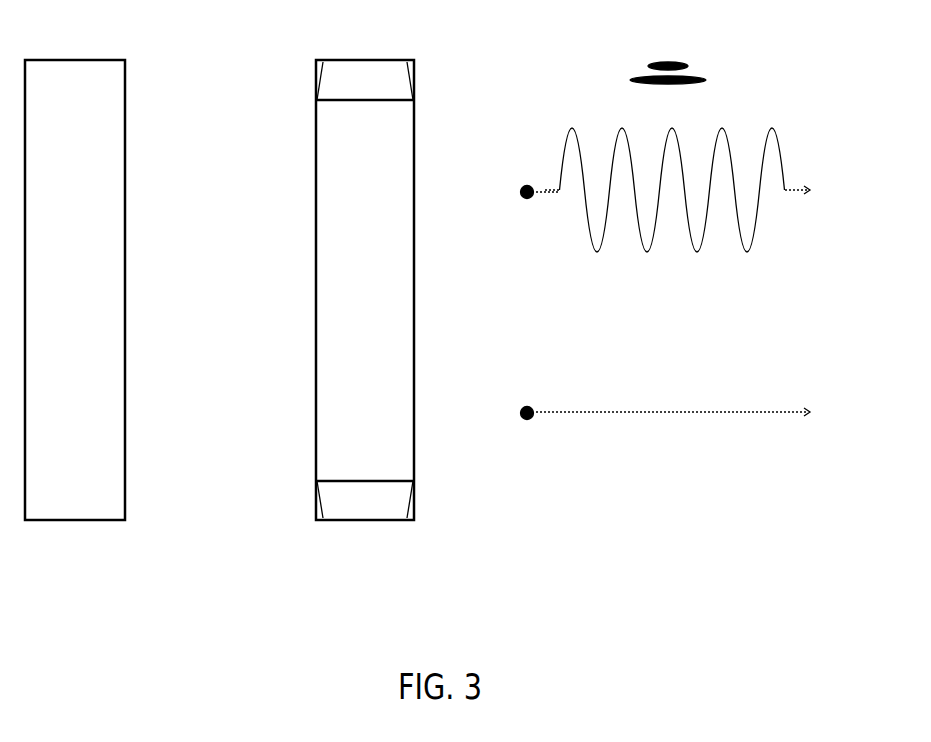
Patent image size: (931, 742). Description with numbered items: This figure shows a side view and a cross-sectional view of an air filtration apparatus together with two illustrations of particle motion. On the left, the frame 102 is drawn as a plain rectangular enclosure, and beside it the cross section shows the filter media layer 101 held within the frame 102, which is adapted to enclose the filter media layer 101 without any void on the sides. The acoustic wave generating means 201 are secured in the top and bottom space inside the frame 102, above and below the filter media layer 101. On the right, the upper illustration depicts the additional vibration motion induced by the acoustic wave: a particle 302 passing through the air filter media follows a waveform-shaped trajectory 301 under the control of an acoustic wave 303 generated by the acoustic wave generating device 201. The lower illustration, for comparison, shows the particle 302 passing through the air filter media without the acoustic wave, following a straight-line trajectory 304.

The filter media layer 101 is at (363, 252).
The frame 102 is at (127, 115).
The acoustic wave generating means 201 is at (337, 83).
The trajectory 301 is at (797, 190).
The particle 302 is at (517, 207).
The acoustic wave 303 is at (693, 66).
The trajectory 304 is at (793, 412).